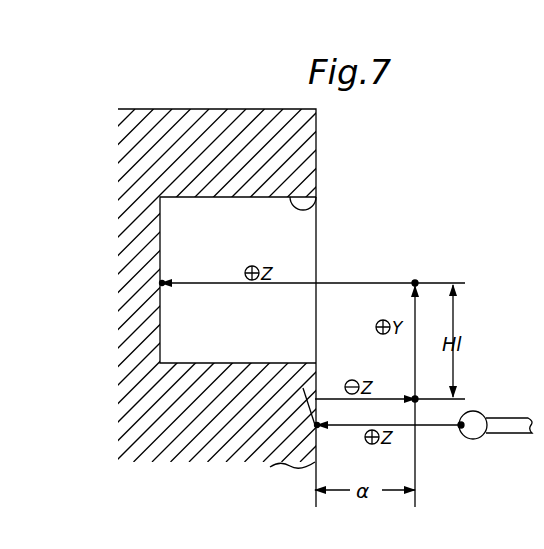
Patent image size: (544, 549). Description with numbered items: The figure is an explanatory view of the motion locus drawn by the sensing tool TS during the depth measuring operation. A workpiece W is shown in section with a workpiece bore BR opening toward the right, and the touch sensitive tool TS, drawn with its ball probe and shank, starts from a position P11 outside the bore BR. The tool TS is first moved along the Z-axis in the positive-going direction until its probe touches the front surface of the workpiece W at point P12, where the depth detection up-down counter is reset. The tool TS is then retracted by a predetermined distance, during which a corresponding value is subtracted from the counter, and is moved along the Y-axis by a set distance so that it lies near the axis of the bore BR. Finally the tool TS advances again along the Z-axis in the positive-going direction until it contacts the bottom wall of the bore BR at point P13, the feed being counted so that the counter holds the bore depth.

The workpiece W is at (166, 452).
The workpiece bore BR is at (316, 202).
The measuring point P13 is at (162, 280).
The measuring point P12 is at (317, 430).
The measuring point P11 is at (462, 430).
The sensing tool TS is at (513, 420).